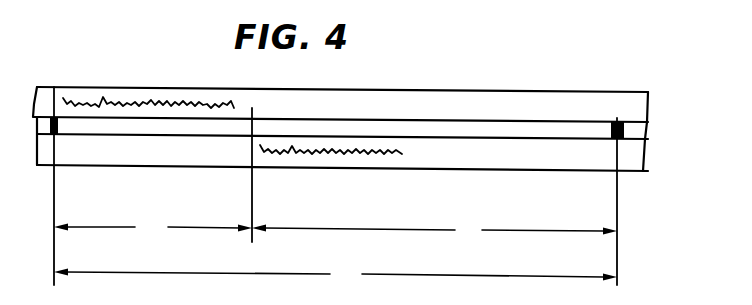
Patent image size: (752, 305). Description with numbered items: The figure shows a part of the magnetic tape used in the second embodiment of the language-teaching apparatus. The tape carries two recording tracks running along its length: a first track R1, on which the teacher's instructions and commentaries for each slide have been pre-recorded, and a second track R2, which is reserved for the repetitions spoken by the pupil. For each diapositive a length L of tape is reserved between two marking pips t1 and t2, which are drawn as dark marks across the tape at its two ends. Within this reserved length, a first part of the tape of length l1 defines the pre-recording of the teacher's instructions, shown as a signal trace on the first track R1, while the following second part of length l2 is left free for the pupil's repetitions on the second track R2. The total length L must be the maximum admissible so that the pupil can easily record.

The marking pip t1 is at (54, 87).
The marking pip t2 is at (620, 122).
The first track R1 is at (541, 108).
The second track R2 is at (432, 155).
The first part of the tape l1 is at (153, 228).
The second part of the tape l2 is at (434, 230).
The length of tape L is at (335, 274).